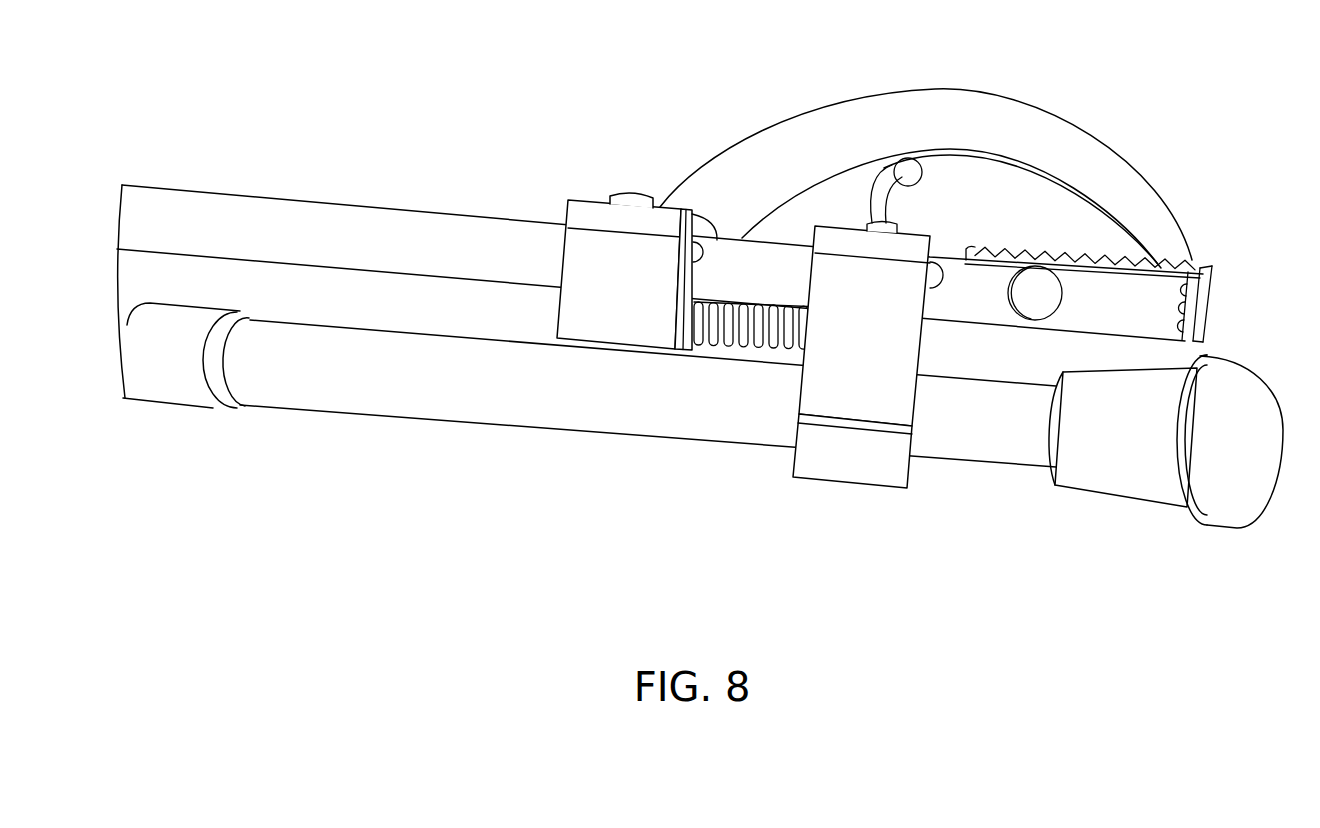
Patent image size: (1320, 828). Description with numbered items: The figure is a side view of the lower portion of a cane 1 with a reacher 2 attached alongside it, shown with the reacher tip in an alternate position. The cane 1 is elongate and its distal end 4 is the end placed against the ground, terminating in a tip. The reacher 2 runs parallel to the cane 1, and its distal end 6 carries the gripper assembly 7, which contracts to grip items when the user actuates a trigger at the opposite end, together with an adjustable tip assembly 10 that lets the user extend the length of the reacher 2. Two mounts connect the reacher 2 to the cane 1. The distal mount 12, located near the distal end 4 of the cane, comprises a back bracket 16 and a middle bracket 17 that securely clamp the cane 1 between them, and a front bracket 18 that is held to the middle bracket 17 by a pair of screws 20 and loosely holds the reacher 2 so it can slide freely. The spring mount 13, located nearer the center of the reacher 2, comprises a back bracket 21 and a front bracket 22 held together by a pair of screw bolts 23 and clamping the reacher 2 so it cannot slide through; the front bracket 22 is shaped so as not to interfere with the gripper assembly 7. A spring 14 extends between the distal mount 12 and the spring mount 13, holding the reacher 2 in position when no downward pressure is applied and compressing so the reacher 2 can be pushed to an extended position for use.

The cane 1 is at (375, 398).
The reacher 2 is at (335, 228).
The distal end 4 is at (1210, 508).
The distal end 6 is at (1088, 214).
The gripper assembly 7 is at (935, 110).
The adjustable tip assembly 10 is at (1107, 248).
The distal mount 12 is at (866, 327).
The spring mount 13 is at (616, 290).
The spring 14 is at (717, 342).
The back bracket 16 is at (868, 477).
The middle bracket 17 is at (893, 390).
The front bracket 18 is at (853, 240).
The screws 20 is at (874, 217).
The back bracket 21 is at (598, 313).
The front bracket 22 is at (665, 205).
The screw bolts 23 is at (623, 197).